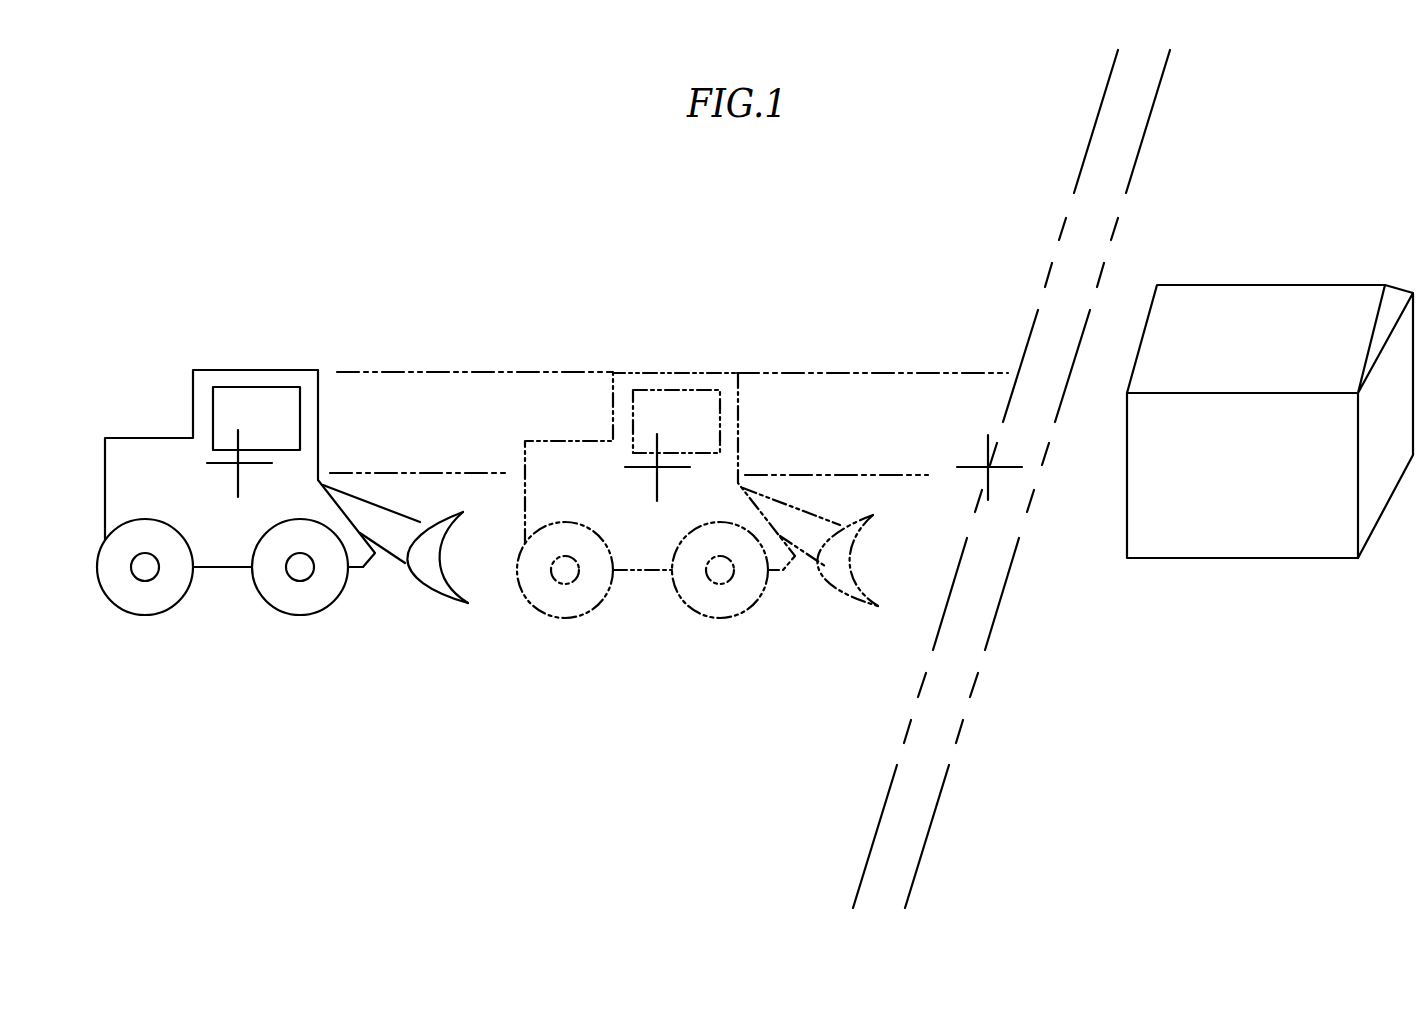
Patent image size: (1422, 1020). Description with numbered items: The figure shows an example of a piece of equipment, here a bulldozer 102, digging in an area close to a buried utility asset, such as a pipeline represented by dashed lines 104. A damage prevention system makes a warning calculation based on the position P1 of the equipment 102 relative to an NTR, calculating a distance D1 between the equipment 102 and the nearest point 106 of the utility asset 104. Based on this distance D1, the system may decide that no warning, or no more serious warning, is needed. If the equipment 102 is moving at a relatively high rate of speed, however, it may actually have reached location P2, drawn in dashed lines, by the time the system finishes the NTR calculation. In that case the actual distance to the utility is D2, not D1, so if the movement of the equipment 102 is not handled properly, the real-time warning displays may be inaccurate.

The equipment 102 is at (227, 547).
The buried utility asset 104 is at (1073, 270).
The nearest point of the asset 106 is at (988, 467).
The position of the equipment P1 is at (238, 463).
The location of the equipment P2 is at (657, 467).
The distance D1 is at (487, 371).
The actual distance D2 is at (812, 373).